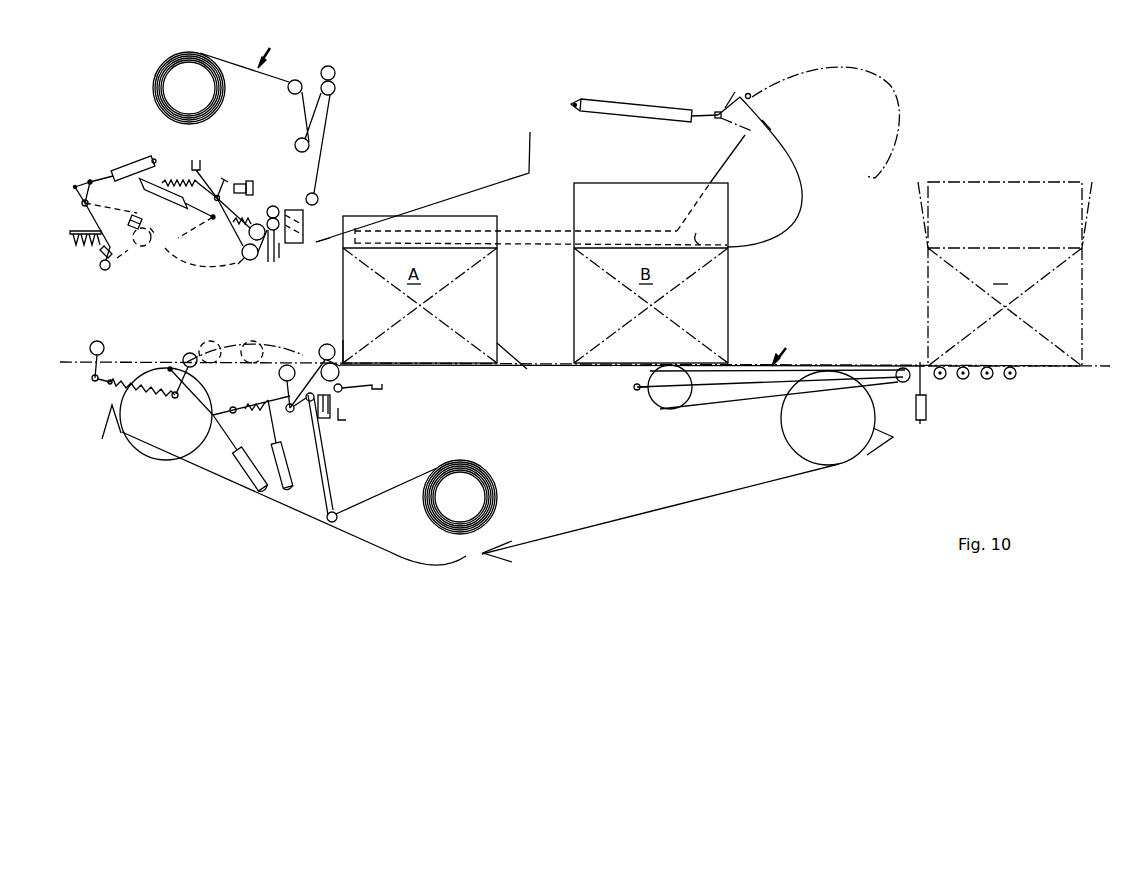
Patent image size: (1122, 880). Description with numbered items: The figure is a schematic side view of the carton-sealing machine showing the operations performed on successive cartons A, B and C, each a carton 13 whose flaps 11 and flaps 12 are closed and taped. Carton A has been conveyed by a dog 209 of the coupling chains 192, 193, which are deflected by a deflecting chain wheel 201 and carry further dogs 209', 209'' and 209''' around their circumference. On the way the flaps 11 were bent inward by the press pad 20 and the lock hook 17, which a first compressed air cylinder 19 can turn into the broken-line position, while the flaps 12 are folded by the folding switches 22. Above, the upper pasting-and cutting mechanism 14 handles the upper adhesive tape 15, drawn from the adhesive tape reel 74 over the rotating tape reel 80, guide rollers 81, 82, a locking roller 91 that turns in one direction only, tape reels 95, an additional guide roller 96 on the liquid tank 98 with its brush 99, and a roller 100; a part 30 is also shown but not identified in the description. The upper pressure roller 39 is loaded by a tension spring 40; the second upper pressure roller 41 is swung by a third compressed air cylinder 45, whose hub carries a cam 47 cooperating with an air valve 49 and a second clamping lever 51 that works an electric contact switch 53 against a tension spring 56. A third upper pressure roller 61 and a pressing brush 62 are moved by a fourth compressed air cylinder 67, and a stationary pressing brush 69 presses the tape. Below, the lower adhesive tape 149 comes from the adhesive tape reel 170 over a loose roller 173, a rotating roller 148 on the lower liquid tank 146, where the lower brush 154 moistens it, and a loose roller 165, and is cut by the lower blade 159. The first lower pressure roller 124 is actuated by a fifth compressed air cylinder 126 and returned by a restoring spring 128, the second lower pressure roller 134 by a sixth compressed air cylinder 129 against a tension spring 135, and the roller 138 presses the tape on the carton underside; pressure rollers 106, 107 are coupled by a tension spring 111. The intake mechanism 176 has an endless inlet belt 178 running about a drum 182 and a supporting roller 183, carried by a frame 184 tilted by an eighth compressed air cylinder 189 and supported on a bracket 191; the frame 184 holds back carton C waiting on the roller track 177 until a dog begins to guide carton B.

The flaps 11 is at (924, 228).
The flaps 12 is at (962, 170).
The carton 13 is at (1084, 290).
The upper pasting-and cutting mechanism 14 is at (268, 49).
The upper adhesive tape 15 is at (242, 66).
The lock hook 17 is at (802, 200).
The first compressed air cylinder 19 is at (626, 108).
The press pad 20 is at (521, 236).
The folding switches 22 is at (428, 209).
The feed member 30 is at (317, 244).
The upper pressure roller 39 is at (256, 260).
The tension spring 40 is at (241, 219).
The second upper pressure roller 41 is at (240, 266).
The third compressed air cylinder 45 is at (158, 206).
The cam 47 is at (232, 177).
The air valve 49 is at (253, 181).
The second clamping lever 51 is at (217, 186).
The electric contact switch 53 is at (200, 164).
The tension spring 56 is at (188, 180).
The third upper pressure roller 61 is at (146, 247).
The pressing brush 62 is at (113, 222).
The fourth compressed air cylinder 67 is at (140, 164).
The stationary pressing brush 69 is at (86, 258).
The adhesive tape reel 74 is at (154, 98).
The rotating tape reel 80 is at (306, 132).
The guide roller 81 is at (290, 92).
The guide roller 82 is at (335, 90).
The locking roller 91 is at (330, 66).
The tape reels 95 is at (318, 197).
The additional guide roller 96 is at (275, 206).
The liquid tank 98 is at (292, 258).
The brush 99 is at (303, 217).
The roller 100 is at (283, 246).
The pressure roller 106 is at (105, 352).
The pressure roller 107 is at (184, 353).
The tension spring 111 is at (124, 392).
The first lower pressure roller 124 is at (280, 378).
The fifth compressed air cylinder 126 is at (234, 466).
The restoring spring 128 is at (250, 412).
The sixth compressed air cylinder 129 is at (294, 486).
The second lower pressure roller 134 is at (338, 348).
The tension spring 135 is at (322, 346).
The roller 138 is at (352, 362).
The liquid tank 146 is at (326, 420).
The rotating roller 148 is at (308, 404).
The lower adhesive tape 149 is at (318, 458).
The lower brush 154 is at (354, 422).
The lower blade 159 is at (376, 386).
The loose roller 165 is at (342, 392).
The adhesive tape reel 170 is at (460, 462).
The loose roller 173 is at (336, 510).
The intake mechanism 176 is at (788, 347).
The roller track 177 is at (990, 380).
The endless inlet belt 178 is at (771, 404).
The drum 182 is at (646, 400).
The supporting roller 183 is at (898, 386).
The frame 184 is at (944, 382).
The eighth compressed air cylinder 189 is at (924, 420).
The bracket 191 is at (148, 455).
The coupling chain 192 is at (666, 506).
The coupling chain 193 is at (749, 486).
The deflecting chain wheel 201 is at (786, 440).
The dog 209 is at (526, 351).
The dog 209' is at (93, 423).
The dog 209'' is at (526, 553).
The dog 209''' is at (899, 450).